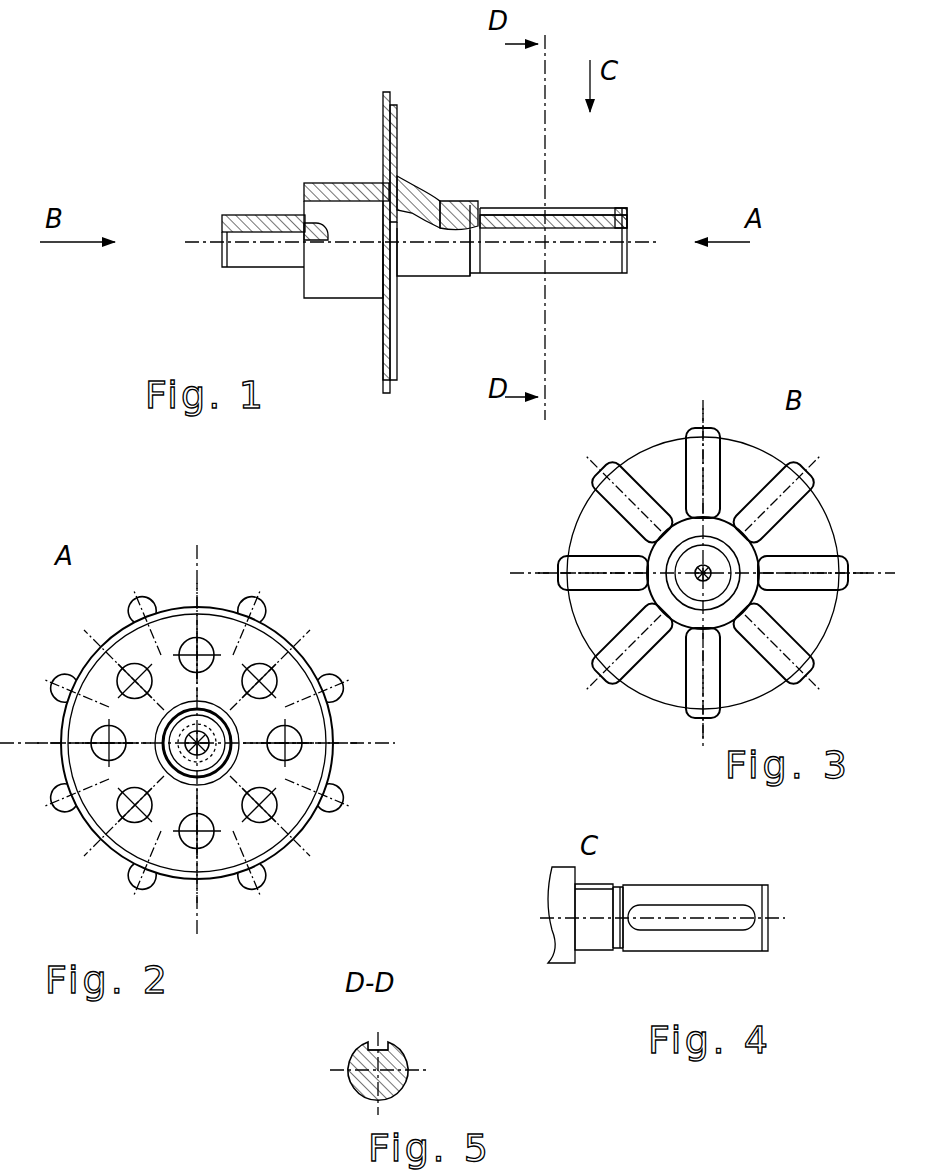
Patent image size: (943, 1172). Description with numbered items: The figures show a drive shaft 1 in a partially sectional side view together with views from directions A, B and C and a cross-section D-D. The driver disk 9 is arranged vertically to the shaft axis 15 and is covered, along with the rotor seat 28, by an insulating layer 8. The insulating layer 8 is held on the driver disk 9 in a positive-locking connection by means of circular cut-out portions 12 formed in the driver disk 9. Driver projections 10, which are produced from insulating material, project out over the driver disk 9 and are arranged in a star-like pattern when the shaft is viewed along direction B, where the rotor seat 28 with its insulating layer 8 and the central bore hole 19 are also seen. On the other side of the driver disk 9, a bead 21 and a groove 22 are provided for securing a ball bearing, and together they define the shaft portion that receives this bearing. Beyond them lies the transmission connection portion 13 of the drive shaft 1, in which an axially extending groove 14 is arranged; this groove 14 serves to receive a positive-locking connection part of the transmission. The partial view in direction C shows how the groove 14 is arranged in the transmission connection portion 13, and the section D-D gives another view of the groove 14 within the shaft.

In FIG. 1, the drive shaft 1 is at (568, 297).
In FIG. 1, the insulating layer 8 is at (330, 183).
In FIG. 3, the insulating layer 8 is at (637, 597).
In FIG. 1, the driver disk 9 is at (399, 368).
In FIG. 2, the driver disk 9 is at (278, 662).
In FIG. 1, the driver projections 10 is at (384, 97).
In FIG. 2, the driver projections 10 is at (248, 607).
In FIG. 3, the driver projections 10 is at (598, 682).
In FIG. 1, the cut-out portions 12 is at (400, 152).
In FIG. 2, the cut-out portions 12 is at (240, 712).
In FIG. 1, the transmission connection portion 13 is at (604, 186).
In FIG. 2, the transmission connection portion 13 is at (232, 758).
In FIG. 4, the transmission connection portion 13 is at (706, 880).
In FIG. 5, the transmission connection portion 13 is at (352, 1088).
In FIG. 1, the groove 14 is at (515, 208).
In FIG. 4, the groove 14 is at (669, 932).
In FIG. 5, the groove 14 is at (363, 1043).
In FIG. 1, the shaft axis 15 is at (168, 238).
In FIG. 1, the central bore hole 19 is at (205, 238).
In FIG. 3, the central bore hole 19 is at (700, 585).
In FIG. 1, the bead 21 is at (420, 282).
In FIG. 2, the bead 21 is at (239, 730).
In FIG. 4, the bead 21 is at (575, 960).
In FIG. 1, the groove 22 is at (478, 280).
In FIG. 4, the groove 22 is at (617, 952).
In FIG. 1, the rotor seat 28 is at (355, 300).
In FIG. 3, the rotor seat 28 is at (637, 540).